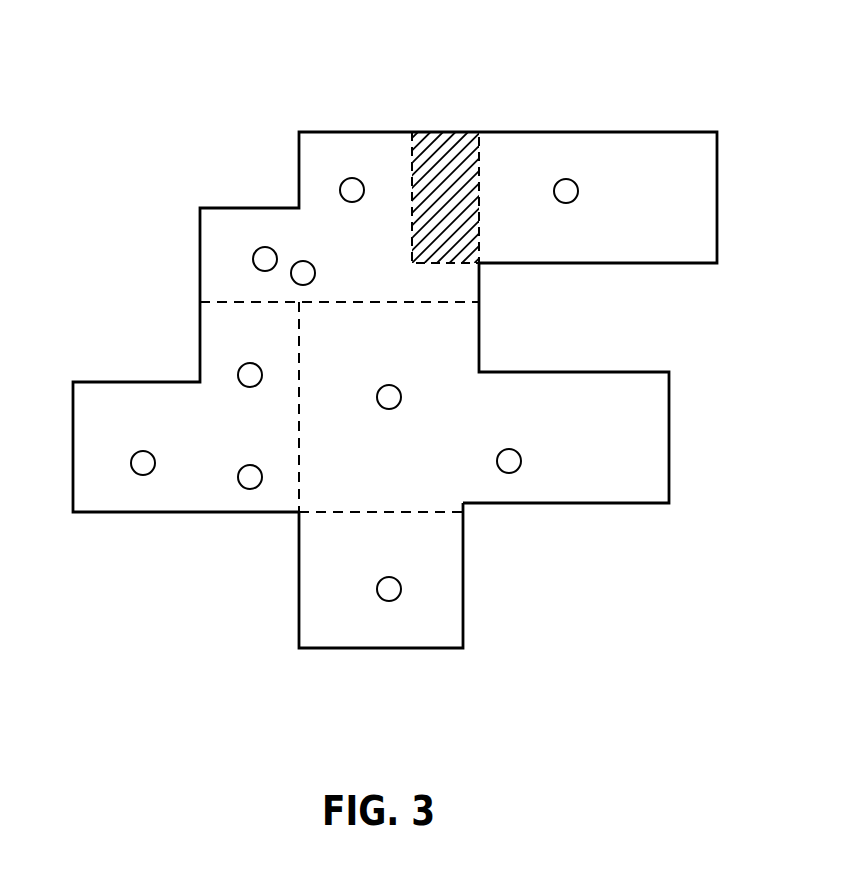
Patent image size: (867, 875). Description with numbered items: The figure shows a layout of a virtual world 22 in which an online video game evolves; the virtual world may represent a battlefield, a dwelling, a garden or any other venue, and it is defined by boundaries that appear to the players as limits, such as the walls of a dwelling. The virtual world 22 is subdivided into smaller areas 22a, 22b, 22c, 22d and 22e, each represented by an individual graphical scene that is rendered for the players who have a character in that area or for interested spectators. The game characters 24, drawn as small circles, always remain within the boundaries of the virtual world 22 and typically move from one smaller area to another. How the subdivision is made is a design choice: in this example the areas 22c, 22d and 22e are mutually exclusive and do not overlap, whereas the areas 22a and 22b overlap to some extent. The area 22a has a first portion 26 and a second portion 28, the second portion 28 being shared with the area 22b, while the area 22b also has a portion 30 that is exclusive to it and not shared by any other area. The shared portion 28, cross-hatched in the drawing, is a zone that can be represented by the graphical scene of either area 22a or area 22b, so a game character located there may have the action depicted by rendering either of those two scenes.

The virtual world 22 is at (552, 71).
The area 22a is at (658, 137).
The area 22b is at (245, 218).
The area 22c is at (210, 345).
The area 22d is at (470, 336).
The area 22e is at (455, 578).
The game characters 24 is at (252, 378).
The first portion 26 is at (634, 217).
The second portion 28 is at (453, 132).
The portion 30 is at (347, 267).